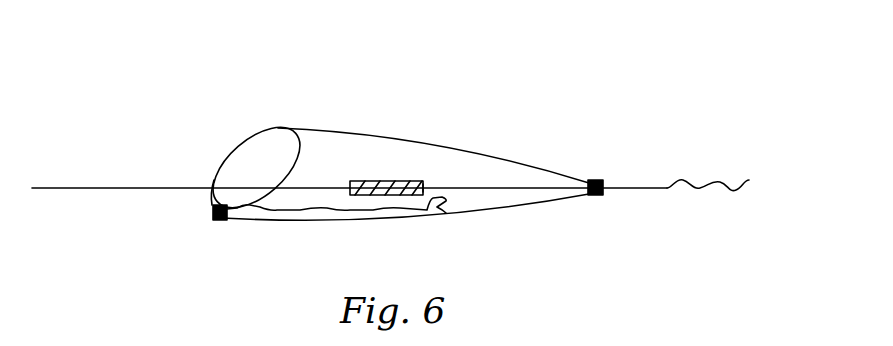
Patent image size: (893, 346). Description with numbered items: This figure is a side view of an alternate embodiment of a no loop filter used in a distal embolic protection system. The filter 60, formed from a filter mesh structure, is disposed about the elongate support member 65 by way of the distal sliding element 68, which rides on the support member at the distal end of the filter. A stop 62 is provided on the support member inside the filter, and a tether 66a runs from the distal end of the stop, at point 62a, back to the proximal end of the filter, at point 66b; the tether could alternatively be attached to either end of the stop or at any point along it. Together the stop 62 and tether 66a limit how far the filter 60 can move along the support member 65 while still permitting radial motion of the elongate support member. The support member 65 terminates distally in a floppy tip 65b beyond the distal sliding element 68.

The filter 60 is at (328, 128).
The stop 62 is at (399, 181).
The point 62a is at (428, 187).
The elongate support member 65 is at (80, 188).
The floppy tip 65b is at (720, 182).
The tether 66a is at (333, 210).
The point 66b is at (216, 221).
The distal sliding element 68 is at (596, 196).